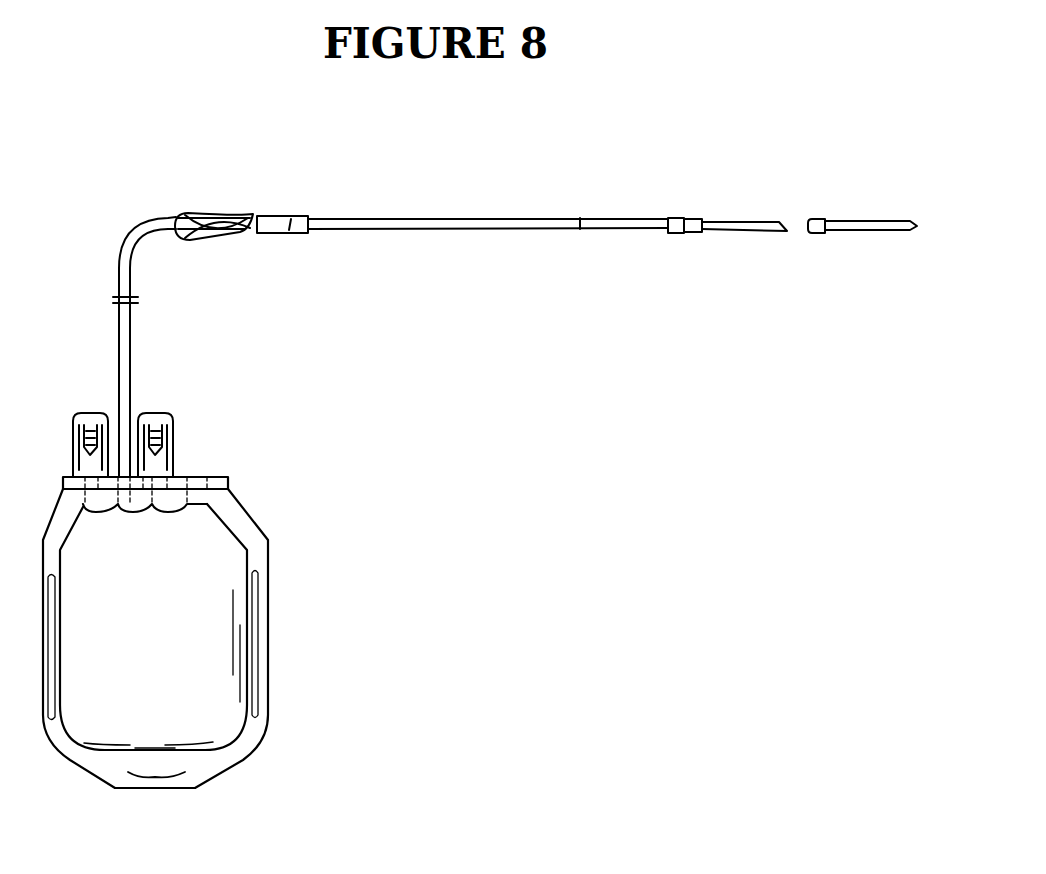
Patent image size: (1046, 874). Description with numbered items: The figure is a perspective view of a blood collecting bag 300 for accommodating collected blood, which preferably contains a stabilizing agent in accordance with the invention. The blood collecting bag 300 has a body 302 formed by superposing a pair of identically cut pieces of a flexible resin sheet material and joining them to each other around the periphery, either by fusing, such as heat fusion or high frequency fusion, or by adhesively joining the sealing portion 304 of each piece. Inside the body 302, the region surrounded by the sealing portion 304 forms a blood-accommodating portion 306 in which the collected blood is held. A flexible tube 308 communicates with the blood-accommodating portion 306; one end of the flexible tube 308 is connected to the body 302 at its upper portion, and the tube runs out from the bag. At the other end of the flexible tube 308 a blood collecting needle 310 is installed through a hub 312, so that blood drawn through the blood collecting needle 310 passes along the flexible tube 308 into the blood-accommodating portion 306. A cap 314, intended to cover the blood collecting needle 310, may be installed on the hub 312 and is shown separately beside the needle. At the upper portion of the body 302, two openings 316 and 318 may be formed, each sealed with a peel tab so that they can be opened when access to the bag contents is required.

The blood collecting bag 300 is at (256, 508).
The body 302 is at (190, 788).
The sealing portion 304 is at (238, 752).
The blood-accommodating portion 306 is at (223, 705).
The flexible tube 308 is at (498, 219).
The blood collecting needle 310 is at (782, 220).
The hub 312 is at (678, 218).
The cap 314 is at (868, 222).
The opening 316 is at (88, 428).
The opening 318 is at (153, 428).